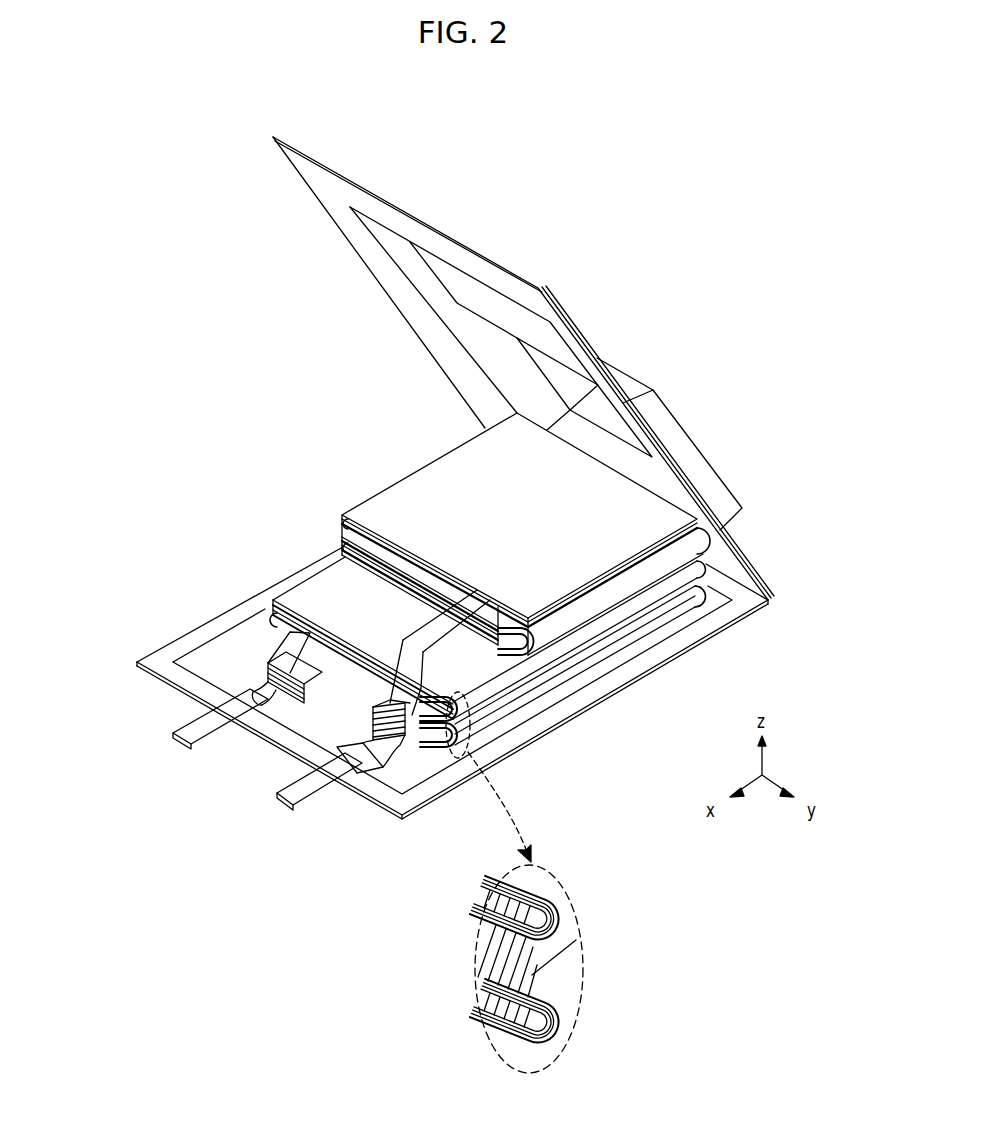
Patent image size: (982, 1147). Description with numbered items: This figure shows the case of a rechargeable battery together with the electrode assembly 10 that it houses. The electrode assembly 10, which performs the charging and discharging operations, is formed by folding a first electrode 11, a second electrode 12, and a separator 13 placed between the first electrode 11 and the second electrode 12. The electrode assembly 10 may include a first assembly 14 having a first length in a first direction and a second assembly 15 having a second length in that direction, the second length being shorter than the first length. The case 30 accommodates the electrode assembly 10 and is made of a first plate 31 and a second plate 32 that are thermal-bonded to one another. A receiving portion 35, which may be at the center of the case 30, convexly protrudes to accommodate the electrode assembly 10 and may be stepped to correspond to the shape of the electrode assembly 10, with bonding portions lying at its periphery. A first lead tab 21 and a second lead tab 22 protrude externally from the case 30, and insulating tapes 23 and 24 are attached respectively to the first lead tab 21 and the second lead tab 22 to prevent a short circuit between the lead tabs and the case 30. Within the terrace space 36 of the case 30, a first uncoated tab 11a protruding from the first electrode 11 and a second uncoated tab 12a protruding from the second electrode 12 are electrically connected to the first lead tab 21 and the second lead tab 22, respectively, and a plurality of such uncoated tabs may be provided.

The electrode assembly 10 is at (333, 510).
The first electrode 11 is at (490, 886).
The first uncoated tab 11a is at (242, 656).
The second electrode 12 is at (478, 959).
The second uncoated tab 12a is at (418, 750).
The separator 13 is at (553, 922).
The first assembly 14 is at (307, 585).
The second assembly 15 is at (648, 581).
The first lead tab 21 is at (176, 738).
The second lead tab 22 is at (289, 796).
The insulating tape 23 is at (212, 709).
The insulating tape 24 is at (340, 787).
The case 30 is at (386, 310).
The first plate 31 is at (642, 664).
The second plate 32 is at (332, 207).
The receiving portion 35 is at (683, 443).
The terrace space 36 is at (240, 655).